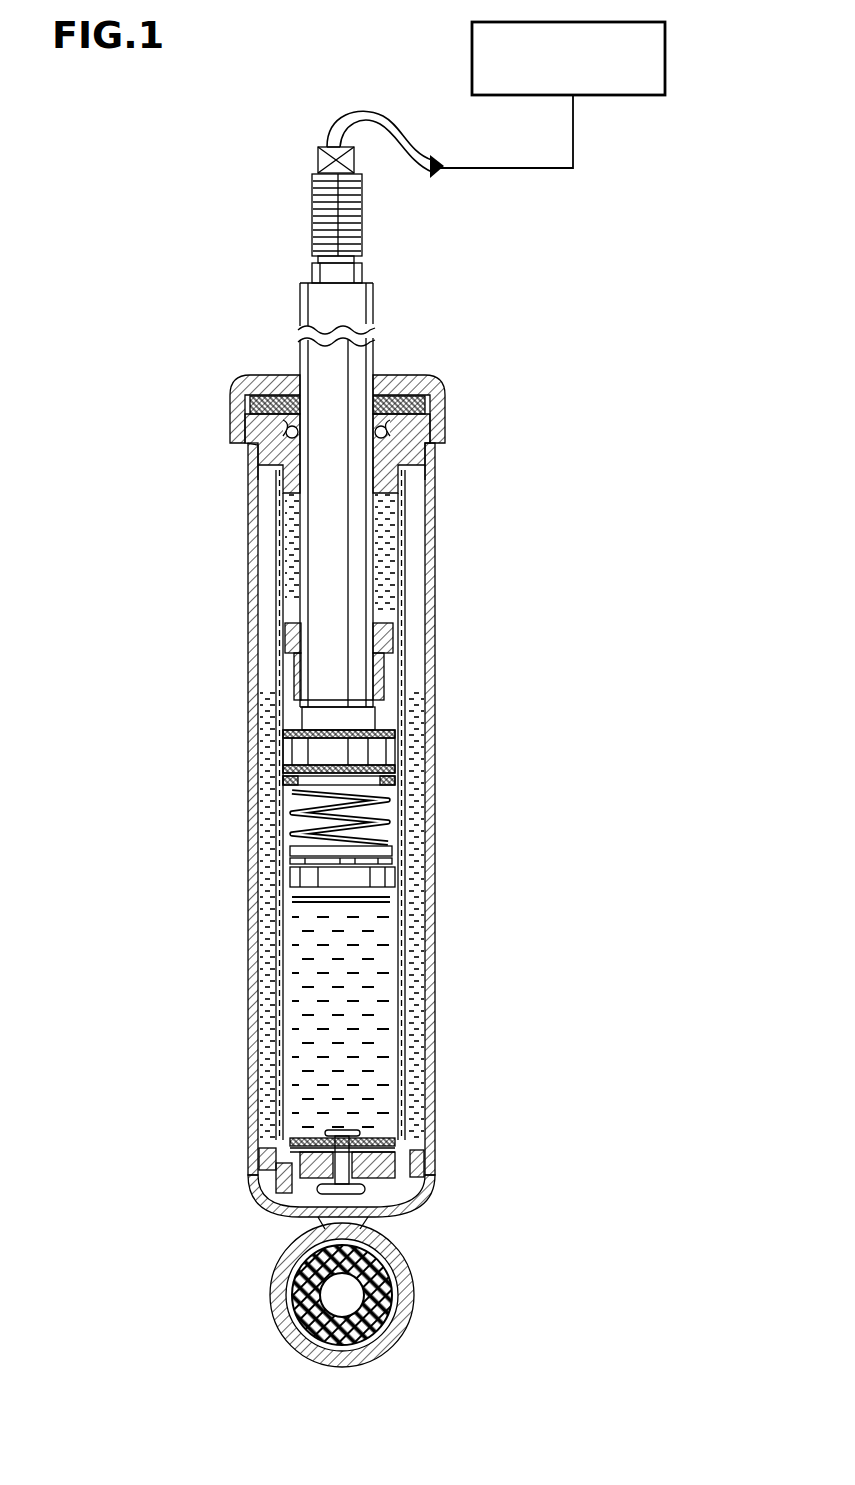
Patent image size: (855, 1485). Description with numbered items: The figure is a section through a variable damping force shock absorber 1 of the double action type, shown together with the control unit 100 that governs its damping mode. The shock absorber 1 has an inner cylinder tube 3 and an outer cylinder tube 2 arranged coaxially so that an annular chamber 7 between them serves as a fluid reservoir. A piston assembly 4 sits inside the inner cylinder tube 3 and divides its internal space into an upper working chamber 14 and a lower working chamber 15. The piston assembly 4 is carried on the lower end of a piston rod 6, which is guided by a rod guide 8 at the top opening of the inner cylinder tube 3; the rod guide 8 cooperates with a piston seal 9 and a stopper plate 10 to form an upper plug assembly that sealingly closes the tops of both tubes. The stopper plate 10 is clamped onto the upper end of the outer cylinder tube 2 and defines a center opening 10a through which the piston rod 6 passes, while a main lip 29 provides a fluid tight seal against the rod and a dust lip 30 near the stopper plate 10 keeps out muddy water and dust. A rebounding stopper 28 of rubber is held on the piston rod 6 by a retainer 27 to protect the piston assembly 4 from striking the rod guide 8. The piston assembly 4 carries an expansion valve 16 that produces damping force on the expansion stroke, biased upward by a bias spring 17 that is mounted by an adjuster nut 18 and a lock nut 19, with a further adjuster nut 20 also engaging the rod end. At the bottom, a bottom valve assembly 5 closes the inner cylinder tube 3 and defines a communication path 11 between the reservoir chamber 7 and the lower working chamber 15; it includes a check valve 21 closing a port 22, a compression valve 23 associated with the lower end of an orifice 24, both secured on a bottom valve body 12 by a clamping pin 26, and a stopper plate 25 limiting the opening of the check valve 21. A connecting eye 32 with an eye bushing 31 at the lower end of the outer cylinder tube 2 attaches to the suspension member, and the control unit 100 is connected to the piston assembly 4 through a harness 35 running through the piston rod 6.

The shock absorber 1 is at (258, 245).
The outer cylinder tube 2 is at (436, 580).
The inner cylinder tube 3 is at (396, 542).
The piston assembly 4 is at (376, 752).
The bottom valve assembly 5 is at (330, 1066).
The piston rod 6 is at (376, 292).
The annular chamber 7 is at (418, 514).
The rod guide 8 is at (413, 463).
The piston seal 9 is at (425, 386).
The stopper plate 10 is at (446, 410).
The center opening 10a is at (373, 378).
The communication path 11 is at (420, 1182).
The bottom valve body 12 is at (428, 1159).
The upper working chamber 14 is at (288, 602).
The lower working chamber 15 is at (352, 1011).
The expansion valve 16 is at (396, 787).
The bias spring 17 is at (382, 831).
The adjuster nut 18 is at (396, 849).
The lock nut 19 is at (396, 861).
The adjuster nut 20 is at (396, 880).
The check valve 21 is at (407, 1147).
The port 22 is at (282, 1147).
The compression valve 23 is at (300, 1204).
The orifice 24 is at (268, 1175).
The stopper plate 25 is at (380, 1142).
The clamping pin 26 is at (345, 1134).
The retainer 27 is at (385, 672).
The rebounding stopper 28 is at (396, 628).
The main lip 29 is at (375, 426).
The dust lip 30 is at (362, 384).
The eye bushing 31 is at (386, 1278).
The connecting eye 32 is at (408, 1296).
The harness 35 is at (382, 122).
The control unit 100 is at (665, 62).